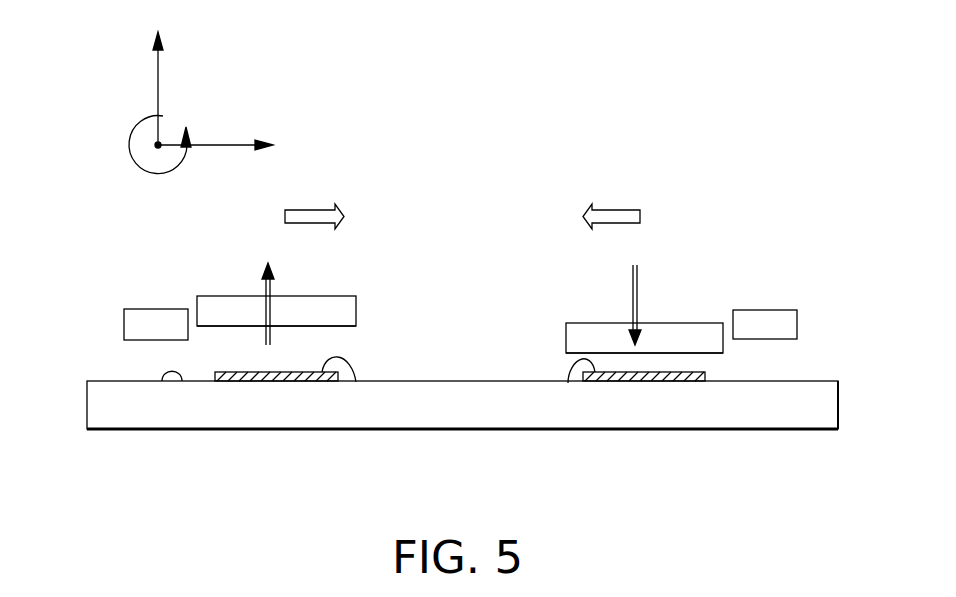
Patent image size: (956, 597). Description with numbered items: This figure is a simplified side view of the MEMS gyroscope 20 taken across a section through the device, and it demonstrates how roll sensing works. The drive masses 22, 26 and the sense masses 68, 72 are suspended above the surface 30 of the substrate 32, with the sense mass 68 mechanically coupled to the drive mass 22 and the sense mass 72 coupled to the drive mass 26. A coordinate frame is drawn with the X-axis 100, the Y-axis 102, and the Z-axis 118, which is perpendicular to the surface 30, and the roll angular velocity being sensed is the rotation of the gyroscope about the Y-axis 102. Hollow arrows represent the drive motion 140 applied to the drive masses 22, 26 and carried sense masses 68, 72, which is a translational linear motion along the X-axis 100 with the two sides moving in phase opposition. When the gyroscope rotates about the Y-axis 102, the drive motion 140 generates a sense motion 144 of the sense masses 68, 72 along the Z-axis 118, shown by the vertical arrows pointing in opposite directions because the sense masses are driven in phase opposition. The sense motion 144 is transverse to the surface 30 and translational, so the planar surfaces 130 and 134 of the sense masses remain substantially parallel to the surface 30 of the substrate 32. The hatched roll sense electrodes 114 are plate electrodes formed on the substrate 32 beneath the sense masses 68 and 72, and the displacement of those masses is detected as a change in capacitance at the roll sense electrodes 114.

The MEMS gyroscope 20 is at (470, 499).
The drive mass 22 is at (140, 313).
The drive mass 26 is at (777, 313).
The surface 30 is at (163, 381).
The substrate 32 is at (97, 403).
The sense mass 68 is at (217, 302).
The sense mass 72 is at (692, 328).
The X-axis 100 is at (232, 144).
The Y-axis 102 is at (165, 118).
The roll sense electrodes 114 is at (356, 382).
The Z-axis 118 is at (158, 72).
The planar surface 130 is at (341, 327).
The planar surface 134 is at (572, 355).
The drive motion 140 is at (317, 208).
The sense motion 144 is at (270, 308).